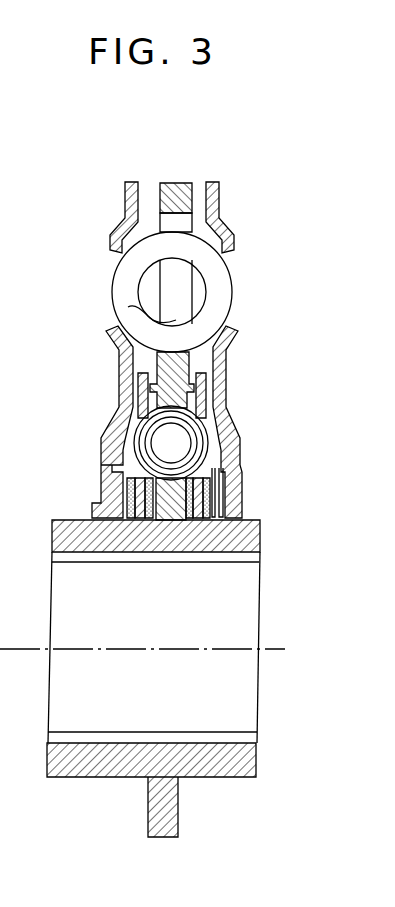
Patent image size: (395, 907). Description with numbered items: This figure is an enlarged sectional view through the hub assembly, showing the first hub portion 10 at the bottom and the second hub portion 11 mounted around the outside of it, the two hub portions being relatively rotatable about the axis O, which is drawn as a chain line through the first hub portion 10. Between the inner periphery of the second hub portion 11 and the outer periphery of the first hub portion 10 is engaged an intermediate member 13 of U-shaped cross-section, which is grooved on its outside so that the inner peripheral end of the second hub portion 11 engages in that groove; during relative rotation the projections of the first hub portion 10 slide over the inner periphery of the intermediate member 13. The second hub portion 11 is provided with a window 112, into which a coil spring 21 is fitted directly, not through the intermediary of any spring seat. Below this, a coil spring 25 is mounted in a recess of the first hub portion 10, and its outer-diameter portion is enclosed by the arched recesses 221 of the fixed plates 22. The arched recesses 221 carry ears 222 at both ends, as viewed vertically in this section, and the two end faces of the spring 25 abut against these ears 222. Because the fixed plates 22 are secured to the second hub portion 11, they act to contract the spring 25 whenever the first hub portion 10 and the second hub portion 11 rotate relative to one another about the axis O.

The first hub portion 10 is at (247, 536).
The axis O is at (266, 651).
The second hub portion 11 is at (178, 188).
The window 112 is at (195, 215).
The intermediate member 13 is at (192, 366).
The coil spring 21 is at (229, 292).
The fixed plate 22 is at (140, 391).
The arched recess 221 is at (142, 447).
The ear 222 is at (148, 443).
The coil spring 25 is at (190, 419).